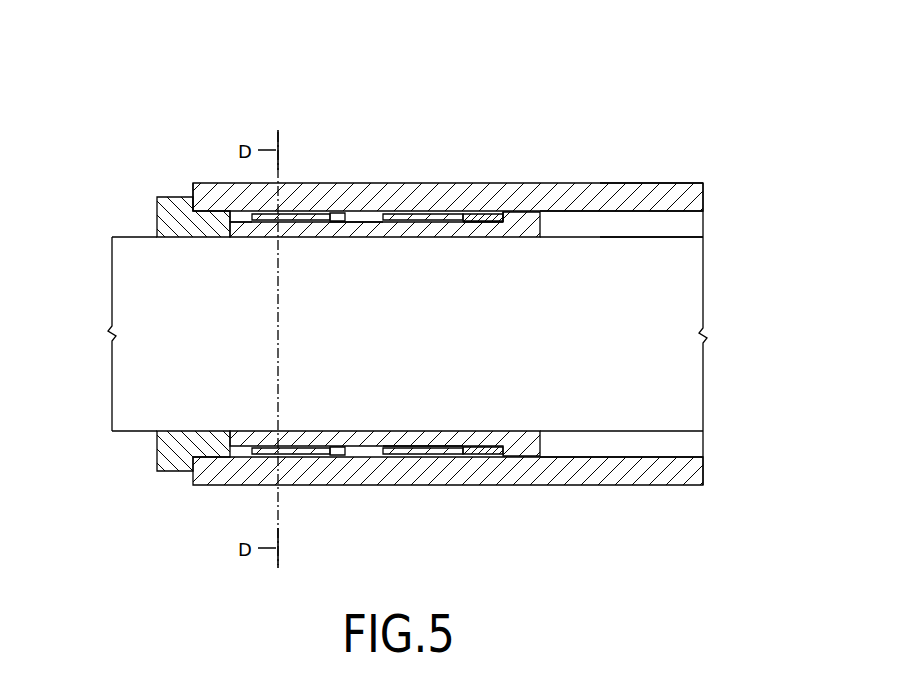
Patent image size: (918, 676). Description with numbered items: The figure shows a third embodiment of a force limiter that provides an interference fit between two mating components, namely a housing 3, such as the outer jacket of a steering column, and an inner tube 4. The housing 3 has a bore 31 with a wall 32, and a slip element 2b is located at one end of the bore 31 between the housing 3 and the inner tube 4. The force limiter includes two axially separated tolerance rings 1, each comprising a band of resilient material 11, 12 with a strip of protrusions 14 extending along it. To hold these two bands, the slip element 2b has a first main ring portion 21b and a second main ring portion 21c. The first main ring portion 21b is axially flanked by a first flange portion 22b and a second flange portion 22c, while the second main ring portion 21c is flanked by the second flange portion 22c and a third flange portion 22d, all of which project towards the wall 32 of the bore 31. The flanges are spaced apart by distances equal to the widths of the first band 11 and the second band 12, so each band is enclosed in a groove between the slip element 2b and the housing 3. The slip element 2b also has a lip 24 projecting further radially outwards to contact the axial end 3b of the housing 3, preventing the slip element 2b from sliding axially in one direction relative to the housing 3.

The tolerance ring 1 is at (283, 213).
The first band of resilient material 11 is at (330, 215).
The second band of resilient material 12 is at (490, 217).
The strip of protrusions 14 is at (462, 458).
The slip element 2b is at (363, 450).
The first main ring portion 21b is at (316, 237).
The second main ring portion 21c is at (462, 226).
The first flange portion 22b is at (213, 237).
The second flange portion 22c is at (377, 228).
The third flange portion 22d is at (560, 237).
The lip 24 is at (156, 190).
The housing 3 is at (657, 183).
The axial end of the housing 3b is at (193, 183).
The bore 31 is at (645, 225).
The wall of the bore 32 is at (703, 193).
The inner tube 4 is at (407, 334).